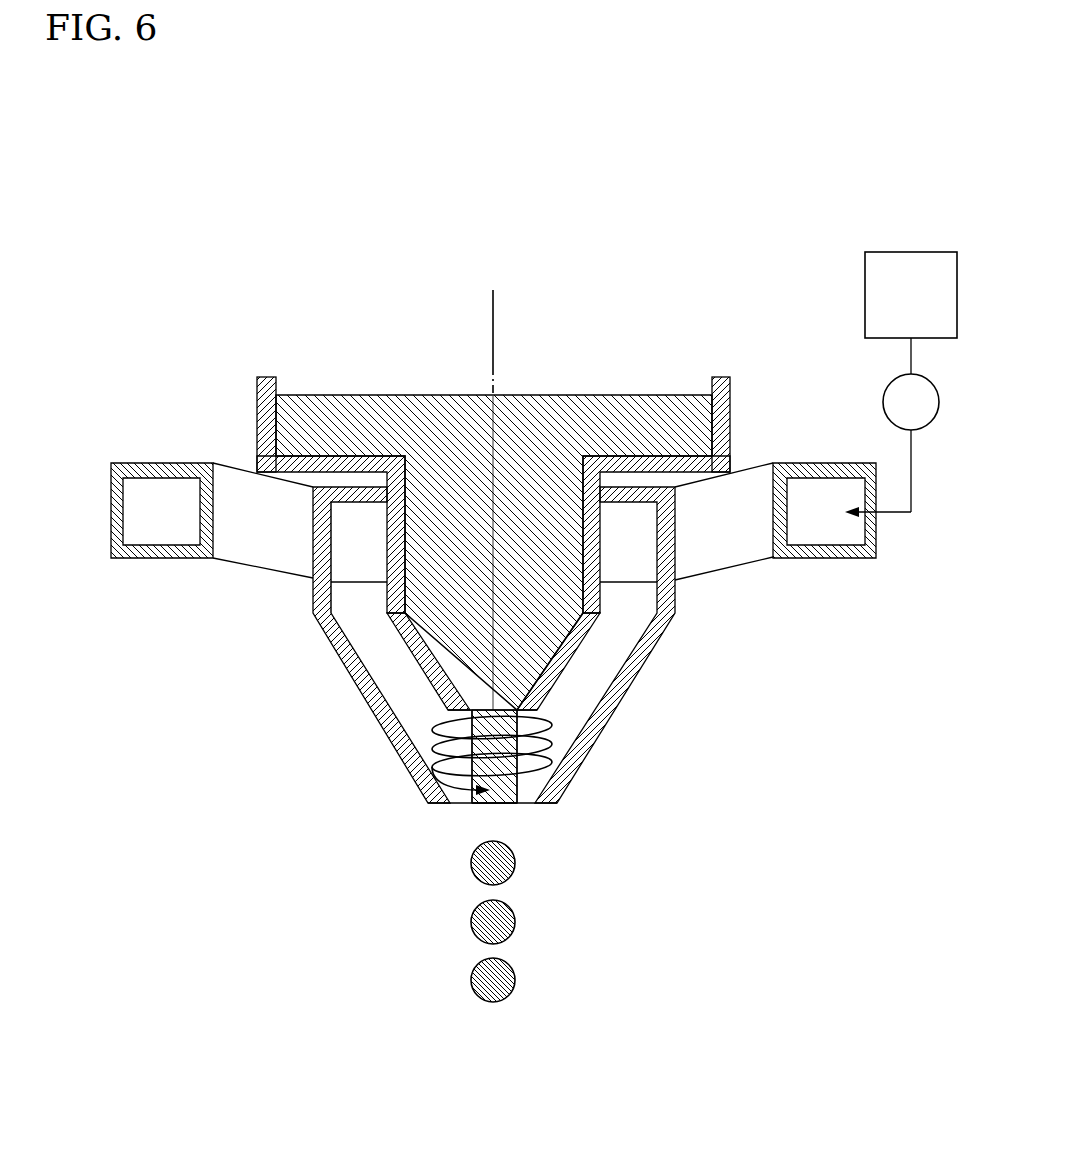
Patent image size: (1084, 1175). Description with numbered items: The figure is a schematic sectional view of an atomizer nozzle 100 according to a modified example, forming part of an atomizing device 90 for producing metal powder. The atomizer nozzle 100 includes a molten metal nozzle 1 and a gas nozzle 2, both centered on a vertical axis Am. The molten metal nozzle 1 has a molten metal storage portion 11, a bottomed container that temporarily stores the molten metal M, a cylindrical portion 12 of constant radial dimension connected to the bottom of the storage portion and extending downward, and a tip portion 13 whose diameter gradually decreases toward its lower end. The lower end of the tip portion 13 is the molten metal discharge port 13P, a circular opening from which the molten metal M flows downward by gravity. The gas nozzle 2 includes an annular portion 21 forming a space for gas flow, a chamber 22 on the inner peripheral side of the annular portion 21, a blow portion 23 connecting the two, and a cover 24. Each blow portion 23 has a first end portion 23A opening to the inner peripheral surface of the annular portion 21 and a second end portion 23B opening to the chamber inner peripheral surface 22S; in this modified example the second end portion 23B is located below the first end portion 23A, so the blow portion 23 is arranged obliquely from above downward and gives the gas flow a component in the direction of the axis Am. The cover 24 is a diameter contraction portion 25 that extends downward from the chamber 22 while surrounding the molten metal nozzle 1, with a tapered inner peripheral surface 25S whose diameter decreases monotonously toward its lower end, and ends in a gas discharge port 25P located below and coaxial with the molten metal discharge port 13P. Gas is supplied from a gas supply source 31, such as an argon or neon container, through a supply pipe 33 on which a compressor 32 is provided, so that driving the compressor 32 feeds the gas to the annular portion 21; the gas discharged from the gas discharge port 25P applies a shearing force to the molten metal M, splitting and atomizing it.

The atomizing device 90 is at (138, 232).
The atomizer nozzle 100 is at (355, 308).
The molten metal nozzle 1 is at (605, 300).
The molten metal storage portion 11 is at (268, 376).
The cylindrical portion 12 is at (385, 530).
The tip portion 13 is at (400, 635).
The molten metal discharge port 13P is at (470, 708).
The molten metal M is at (562, 393).
The axis Am is at (493, 290).
The gas nozzle 2 is at (642, 707).
The annular portion 21 is at (835, 575).
The chamber 22 is at (668, 622).
The chamber inner peripheral surface 22S is at (331, 550).
The blow portion 23 is at (248, 545).
The first end portion 23A is at (773, 463).
The second end portion 23B is at (677, 582).
The cover 24 is at (585, 737).
The diameter contraction portion 25 is at (465, 825).
The tapered inner peripheral surface 25S is at (395, 738).
The gas discharge port 25P is at (523, 808).
The gas supply source 31 is at (912, 250).
The compressor 32 is at (883, 393).
The supply pipe 33 is at (915, 503).